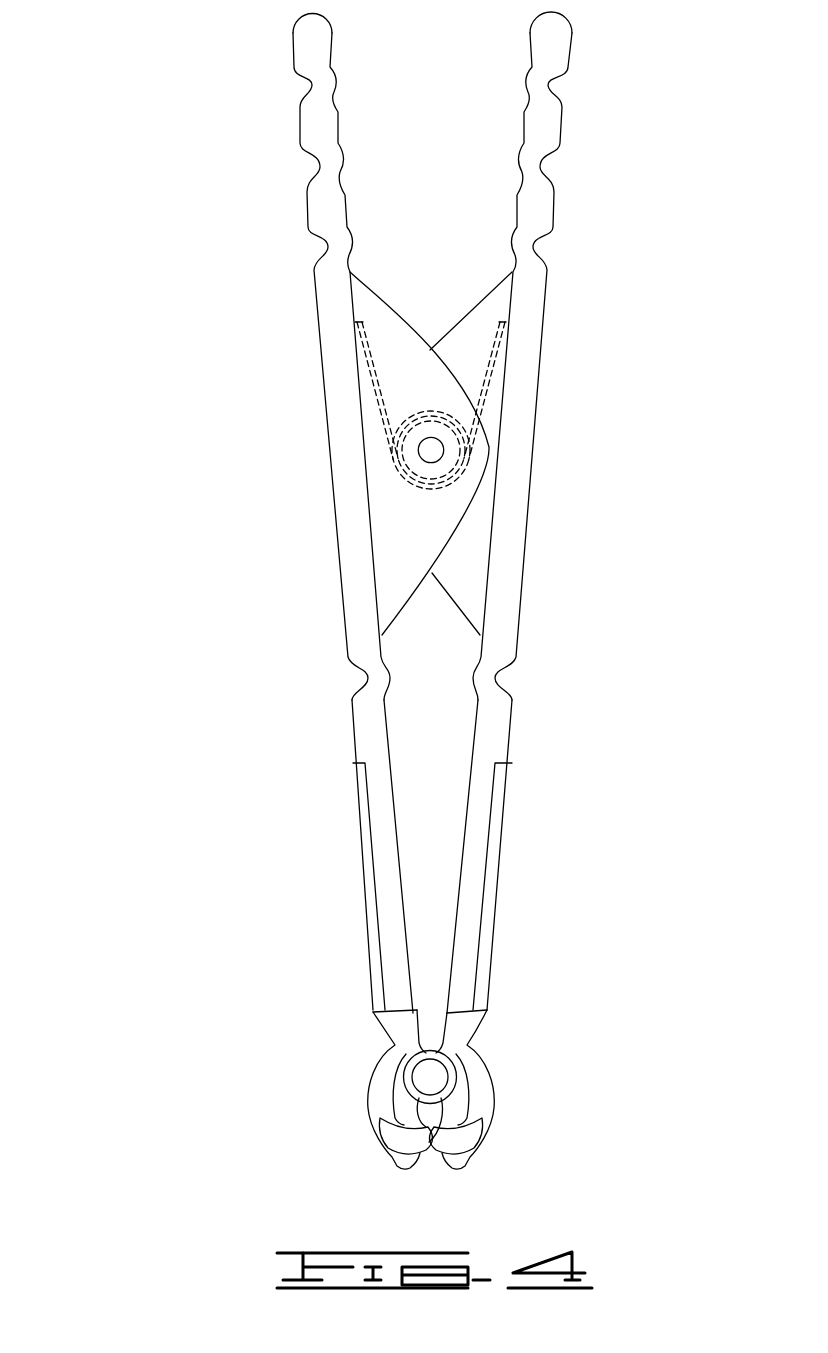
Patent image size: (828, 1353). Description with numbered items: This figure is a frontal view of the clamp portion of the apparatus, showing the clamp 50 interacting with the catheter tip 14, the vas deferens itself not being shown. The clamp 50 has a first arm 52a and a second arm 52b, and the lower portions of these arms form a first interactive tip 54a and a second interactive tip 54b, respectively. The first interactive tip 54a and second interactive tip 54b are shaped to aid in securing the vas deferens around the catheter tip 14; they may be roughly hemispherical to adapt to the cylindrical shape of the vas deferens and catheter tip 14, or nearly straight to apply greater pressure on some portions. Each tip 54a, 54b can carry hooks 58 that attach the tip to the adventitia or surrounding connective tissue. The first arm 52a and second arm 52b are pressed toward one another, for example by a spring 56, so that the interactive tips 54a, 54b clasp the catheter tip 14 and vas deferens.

The clamp 50 is at (155, 162).
The first arm 52a is at (335, 533).
The second arm 52b is at (547, 315).
The spring 56 is at (458, 477).
The first interactive tip 54a is at (372, 1090).
The second interactive tip 54b is at (483, 1067).
The catheter tip 14 is at (445, 1088).
The hooks 58 is at (395, 1147).